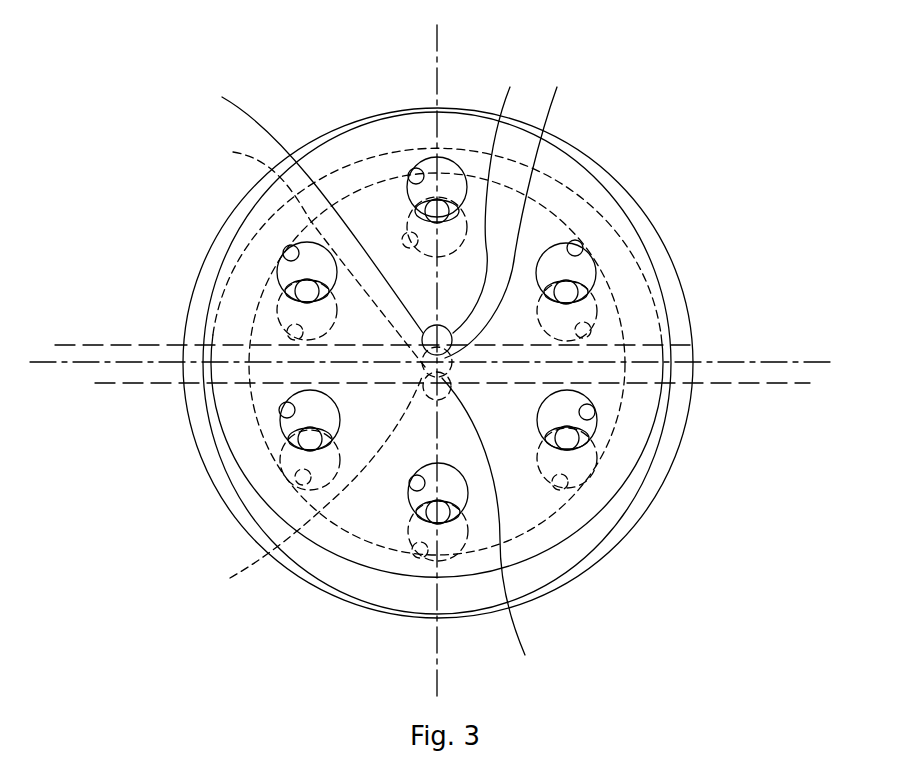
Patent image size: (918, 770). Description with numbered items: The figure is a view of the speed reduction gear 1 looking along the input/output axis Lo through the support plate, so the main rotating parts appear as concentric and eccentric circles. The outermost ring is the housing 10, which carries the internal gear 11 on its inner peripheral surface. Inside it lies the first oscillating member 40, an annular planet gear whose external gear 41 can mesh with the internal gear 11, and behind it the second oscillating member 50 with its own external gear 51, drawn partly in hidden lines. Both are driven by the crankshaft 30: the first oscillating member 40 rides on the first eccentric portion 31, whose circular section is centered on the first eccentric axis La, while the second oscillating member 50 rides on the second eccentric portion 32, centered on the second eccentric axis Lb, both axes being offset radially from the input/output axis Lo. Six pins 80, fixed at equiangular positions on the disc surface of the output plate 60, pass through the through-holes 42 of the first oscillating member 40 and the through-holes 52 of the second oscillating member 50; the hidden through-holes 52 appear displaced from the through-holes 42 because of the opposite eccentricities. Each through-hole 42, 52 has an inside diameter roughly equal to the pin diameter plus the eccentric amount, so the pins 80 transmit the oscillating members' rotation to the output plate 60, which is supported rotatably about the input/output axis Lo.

The speed reduction gear 1 is at (612, 58).
The housing 10 is at (630, 198).
The internal gear 11 is at (690, 310).
The crankshaft 30 is at (311, 252).
The first eccentric portion 31 is at (306, 203).
The second eccentric portion 32 is at (309, 487).
The first oscillating member 40 is at (658, 225).
The external gear 41 is at (672, 270).
The through-holes 42 is at (416, 176).
The second oscillating member 50 is at (623, 540).
The external gear 51 is at (640, 507).
The through-holes 52 is at (407, 237).
The output plate 60 is at (645, 400).
The pins 80 is at (414, 211).
The first eccentric axis La is at (490, 199).
The input/output axis Lo is at (510, 209).
The second eccentric axis Lb is at (495, 528).